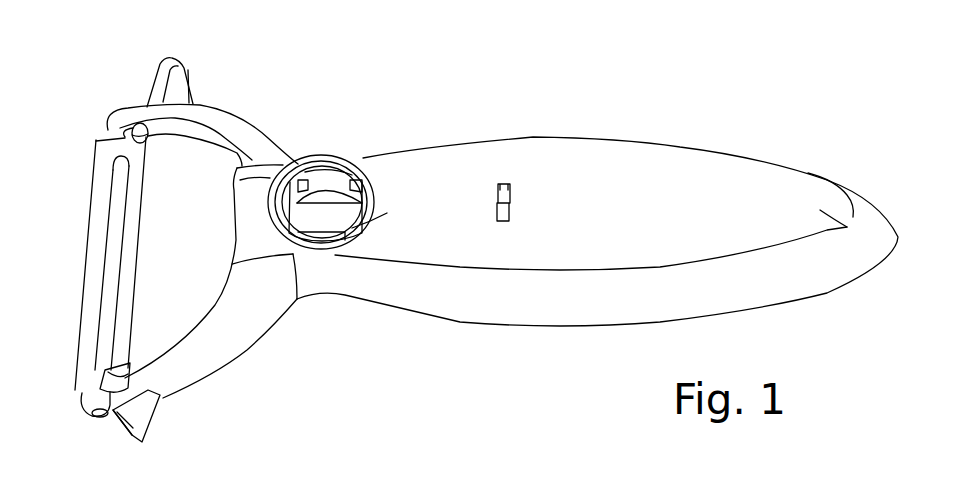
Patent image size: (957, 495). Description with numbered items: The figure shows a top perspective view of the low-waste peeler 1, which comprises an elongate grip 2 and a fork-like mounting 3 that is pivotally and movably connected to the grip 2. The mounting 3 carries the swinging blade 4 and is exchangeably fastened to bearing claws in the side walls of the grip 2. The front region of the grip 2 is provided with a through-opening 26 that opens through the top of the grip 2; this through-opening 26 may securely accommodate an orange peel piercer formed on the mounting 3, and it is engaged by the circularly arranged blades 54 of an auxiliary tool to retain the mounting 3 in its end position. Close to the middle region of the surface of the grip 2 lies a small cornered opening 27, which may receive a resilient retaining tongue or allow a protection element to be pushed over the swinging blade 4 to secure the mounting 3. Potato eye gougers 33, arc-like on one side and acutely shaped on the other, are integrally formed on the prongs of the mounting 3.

The low-waste peeler 1 is at (333, 374).
The elongate grip 2 is at (431, 322).
The fork-like mounting 3 is at (248, 354).
The swinging blade 4 is at (87, 262).
The through-opening 26 is at (333, 197).
The small cornered opening 27 is at (505, 183).
The potato eye gougers 33 is at (198, 64).
The blades 54 is at (320, 170).